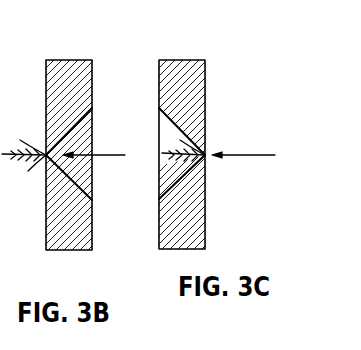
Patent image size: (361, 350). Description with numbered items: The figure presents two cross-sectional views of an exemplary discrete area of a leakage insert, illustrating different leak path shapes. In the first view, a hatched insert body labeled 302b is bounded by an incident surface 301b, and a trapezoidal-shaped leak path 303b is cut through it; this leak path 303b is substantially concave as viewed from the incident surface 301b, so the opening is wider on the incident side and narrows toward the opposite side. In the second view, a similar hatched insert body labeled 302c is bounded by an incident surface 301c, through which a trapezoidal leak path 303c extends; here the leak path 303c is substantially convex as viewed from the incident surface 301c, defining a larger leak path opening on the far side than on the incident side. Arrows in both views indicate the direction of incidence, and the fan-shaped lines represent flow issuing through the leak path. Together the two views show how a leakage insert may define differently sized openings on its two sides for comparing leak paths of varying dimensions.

In FIG. 3B, the incident surface 301b is at (92, 240).
In FIG. 3B, the mirror body hatched region 302b is at (68, 60).
In FIG. 3B, the trapezoidal-shaped leak path 303b is at (67, 136).
In FIG. 3C, the incident surface 301c is at (205, 228).
In FIG. 3C, the mirror body hatched region 302c is at (178, 60).
In FIG. 3B, the trapezoidal leak path 303c is at (160, 128).
In FIG. 3C, the trapezoidal leak path 303c is at (182, 153).